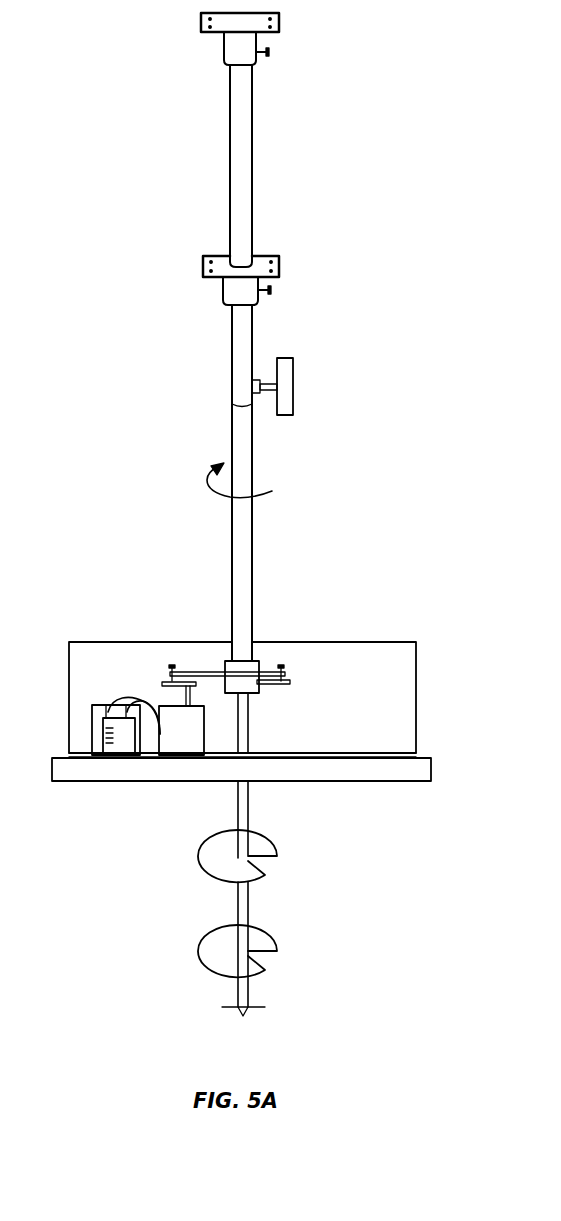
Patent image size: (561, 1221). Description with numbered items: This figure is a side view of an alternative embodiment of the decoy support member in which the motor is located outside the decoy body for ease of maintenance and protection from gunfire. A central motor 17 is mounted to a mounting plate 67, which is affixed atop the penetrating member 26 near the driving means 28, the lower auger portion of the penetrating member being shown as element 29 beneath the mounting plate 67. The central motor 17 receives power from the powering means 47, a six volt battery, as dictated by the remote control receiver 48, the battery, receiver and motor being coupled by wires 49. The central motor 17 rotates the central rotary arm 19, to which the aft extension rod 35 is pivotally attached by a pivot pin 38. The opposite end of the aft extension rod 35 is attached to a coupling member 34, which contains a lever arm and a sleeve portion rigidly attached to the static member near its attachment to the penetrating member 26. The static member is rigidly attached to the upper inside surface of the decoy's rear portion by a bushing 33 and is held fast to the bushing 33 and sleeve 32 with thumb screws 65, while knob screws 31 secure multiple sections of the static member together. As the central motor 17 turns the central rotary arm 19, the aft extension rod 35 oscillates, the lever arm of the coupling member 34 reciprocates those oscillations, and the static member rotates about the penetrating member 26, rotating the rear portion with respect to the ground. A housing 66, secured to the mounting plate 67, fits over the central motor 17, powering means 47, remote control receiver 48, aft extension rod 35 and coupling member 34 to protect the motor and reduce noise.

The central motor 17 is at (205, 717).
The central rotary arm 19 is at (163, 684).
The penetrating member 26 is at (202, 807).
The driving means 28 is at (125, 783).
The auger shaft 29 is at (249, 797).
The knob screws 31 is at (294, 386).
The sleeve 32 is at (222, 290).
The bushing 33 is at (223, 45).
The coupling member 34 is at (281, 686).
The aft extension rod 35 is at (208, 672).
The pivot pin 38 is at (172, 665).
The powering means 47 is at (93, 720).
The remote control receiver 48 is at (103, 752).
The wires 49 is at (118, 708).
The thumb screws 65 is at (271, 52).
The housing 66 is at (417, 680).
The mounting plate 67 is at (347, 752).